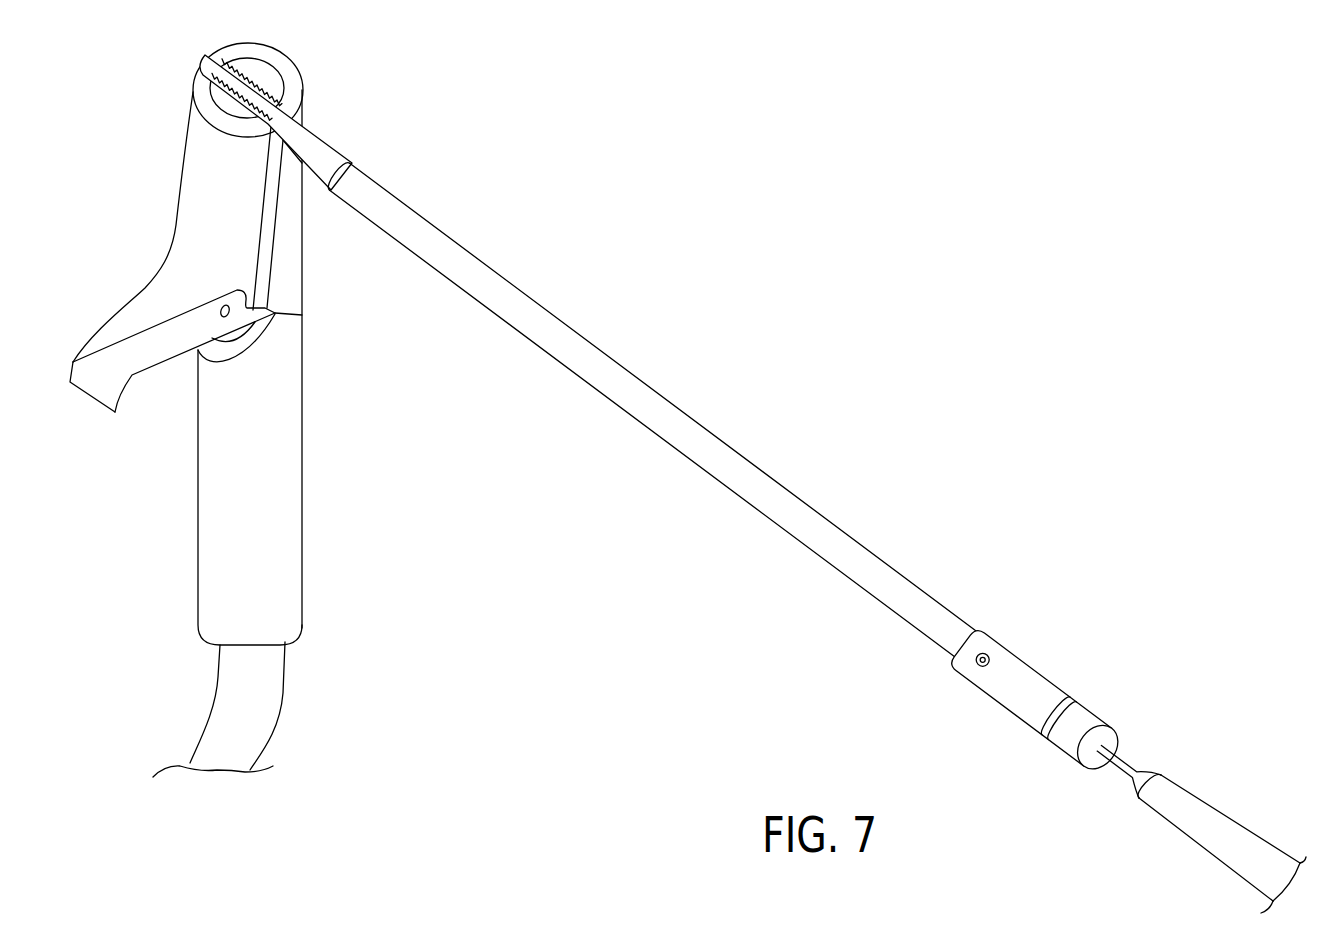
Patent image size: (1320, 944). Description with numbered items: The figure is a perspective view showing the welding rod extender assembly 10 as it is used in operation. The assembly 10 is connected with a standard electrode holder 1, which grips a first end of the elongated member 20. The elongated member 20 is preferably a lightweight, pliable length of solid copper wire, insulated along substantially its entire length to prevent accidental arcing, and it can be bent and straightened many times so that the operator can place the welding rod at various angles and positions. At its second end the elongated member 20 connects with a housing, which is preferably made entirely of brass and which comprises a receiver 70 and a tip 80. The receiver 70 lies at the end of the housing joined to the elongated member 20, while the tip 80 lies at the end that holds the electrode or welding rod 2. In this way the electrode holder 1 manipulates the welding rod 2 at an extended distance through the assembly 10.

The electrode holder 1 is at (300, 481).
The electrode 2 is at (1177, 784).
The welding rod extending assembly 10 is at (865, 490).
The elongated member 20 is at (448, 240).
The receiver 70 is at (1010, 662).
The tip 80 is at (1088, 720).